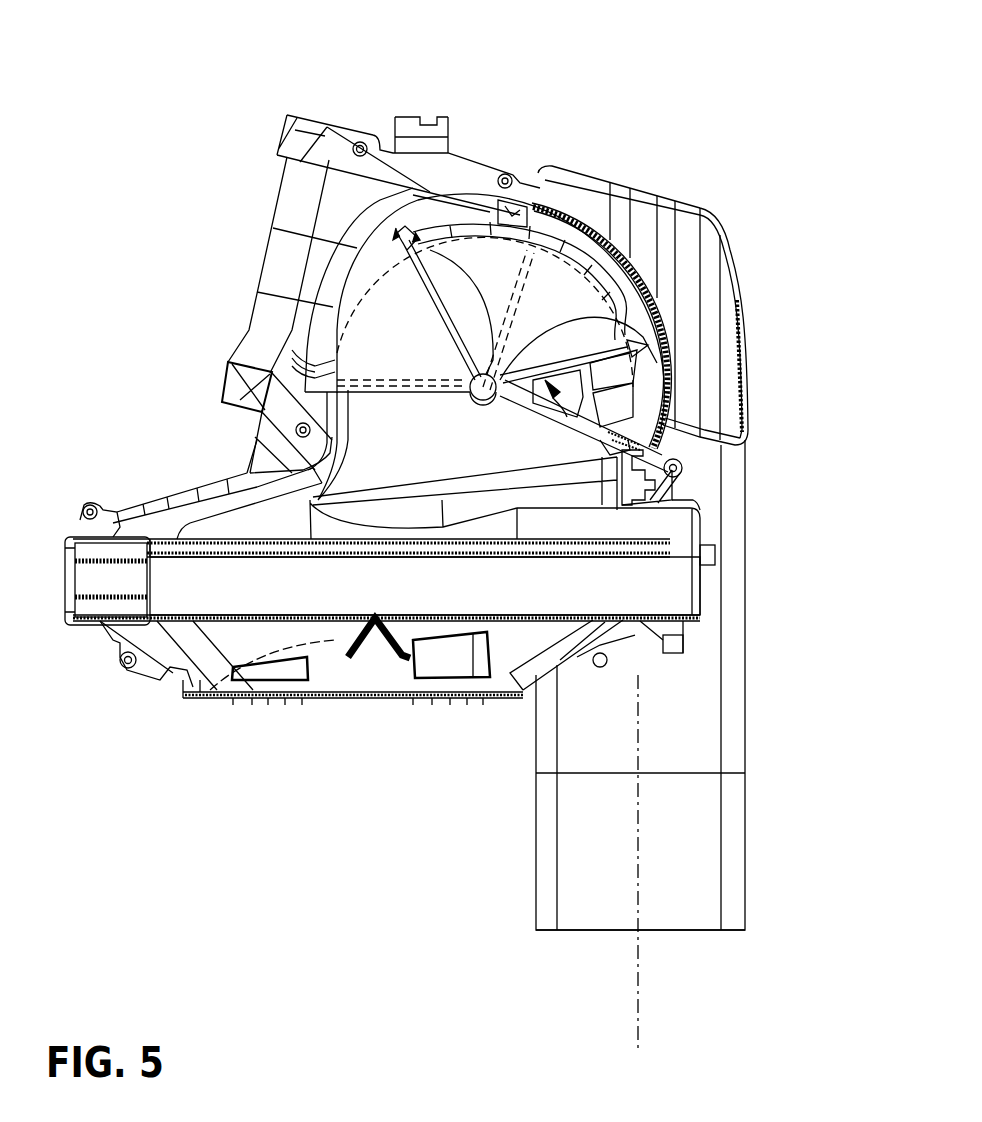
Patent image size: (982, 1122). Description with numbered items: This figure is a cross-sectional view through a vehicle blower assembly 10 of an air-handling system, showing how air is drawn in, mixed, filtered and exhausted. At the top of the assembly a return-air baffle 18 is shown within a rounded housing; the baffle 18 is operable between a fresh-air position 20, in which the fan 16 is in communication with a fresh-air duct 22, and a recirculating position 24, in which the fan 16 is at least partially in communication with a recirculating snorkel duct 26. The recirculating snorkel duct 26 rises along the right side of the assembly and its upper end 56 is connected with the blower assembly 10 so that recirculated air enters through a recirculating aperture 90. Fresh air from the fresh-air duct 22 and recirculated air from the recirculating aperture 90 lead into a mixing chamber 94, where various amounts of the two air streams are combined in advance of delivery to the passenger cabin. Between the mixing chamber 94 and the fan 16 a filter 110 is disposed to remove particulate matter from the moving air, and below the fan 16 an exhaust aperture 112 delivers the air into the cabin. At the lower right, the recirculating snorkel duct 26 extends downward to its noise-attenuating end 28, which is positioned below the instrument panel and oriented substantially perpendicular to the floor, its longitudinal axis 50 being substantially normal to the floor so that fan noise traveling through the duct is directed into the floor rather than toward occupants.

The blower assembly 10 is at (483, 100).
The fan 16 is at (188, 692).
The return-air baffle 18 is at (453, 287).
The fresh-air position 20 is at (385, 399).
The fresh-air duct 22 is at (312, 118).
The recirculating position 24 is at (683, 468).
The recirculating snorkel duct 26 is at (703, 733).
The noise-attenuating end 28 is at (683, 930).
The longitudinal axis 50 is at (637, 890).
The upper end 56 is at (608, 190).
The recirculating aperture 90 is at (640, 282).
The mixing chamber 94 is at (548, 380).
The filter 110 is at (460, 552).
The exhaust aperture 112 is at (292, 700).